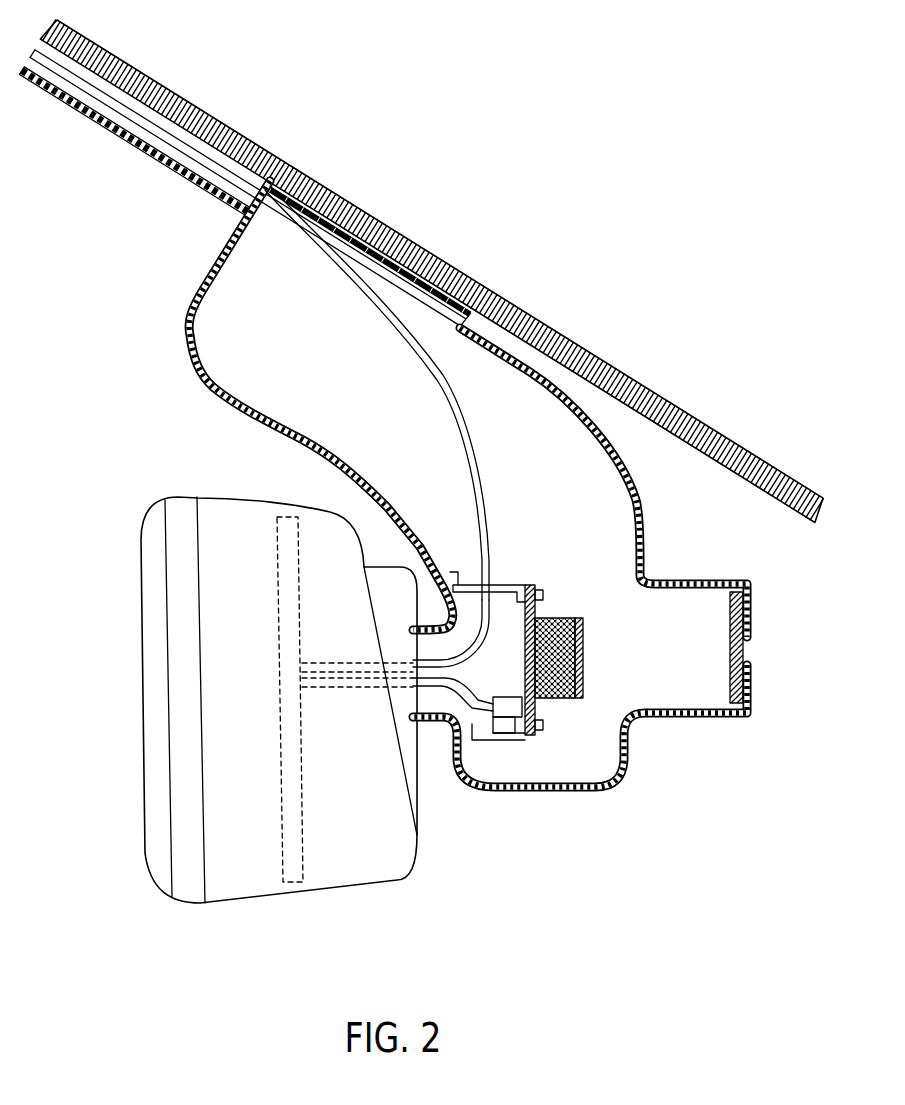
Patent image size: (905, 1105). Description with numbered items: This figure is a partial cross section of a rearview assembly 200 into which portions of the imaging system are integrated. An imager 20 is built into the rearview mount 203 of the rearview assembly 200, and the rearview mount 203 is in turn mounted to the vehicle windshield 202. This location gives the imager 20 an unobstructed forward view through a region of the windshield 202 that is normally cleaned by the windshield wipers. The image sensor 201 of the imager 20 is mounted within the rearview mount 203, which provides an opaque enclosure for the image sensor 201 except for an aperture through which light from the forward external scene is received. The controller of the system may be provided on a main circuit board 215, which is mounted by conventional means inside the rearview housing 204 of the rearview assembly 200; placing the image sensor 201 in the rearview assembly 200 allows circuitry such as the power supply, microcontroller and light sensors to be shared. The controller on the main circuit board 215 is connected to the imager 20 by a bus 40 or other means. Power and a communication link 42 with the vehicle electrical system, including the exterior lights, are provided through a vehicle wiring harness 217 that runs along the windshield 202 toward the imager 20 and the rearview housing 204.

The imager 20 is at (594, 720).
The bus 40 is at (450, 743).
The communication link 42 is at (470, 485).
The rearview assembly 200 is at (156, 925).
The image sensor 201 is at (514, 663).
The windshield 202 is at (483, 252).
The rearview mount 203 is at (250, 296).
The rearview housing 204 is at (133, 756).
The main circuit board 215 is at (303, 822).
The vehicle wiring harness 217 is at (452, 427).